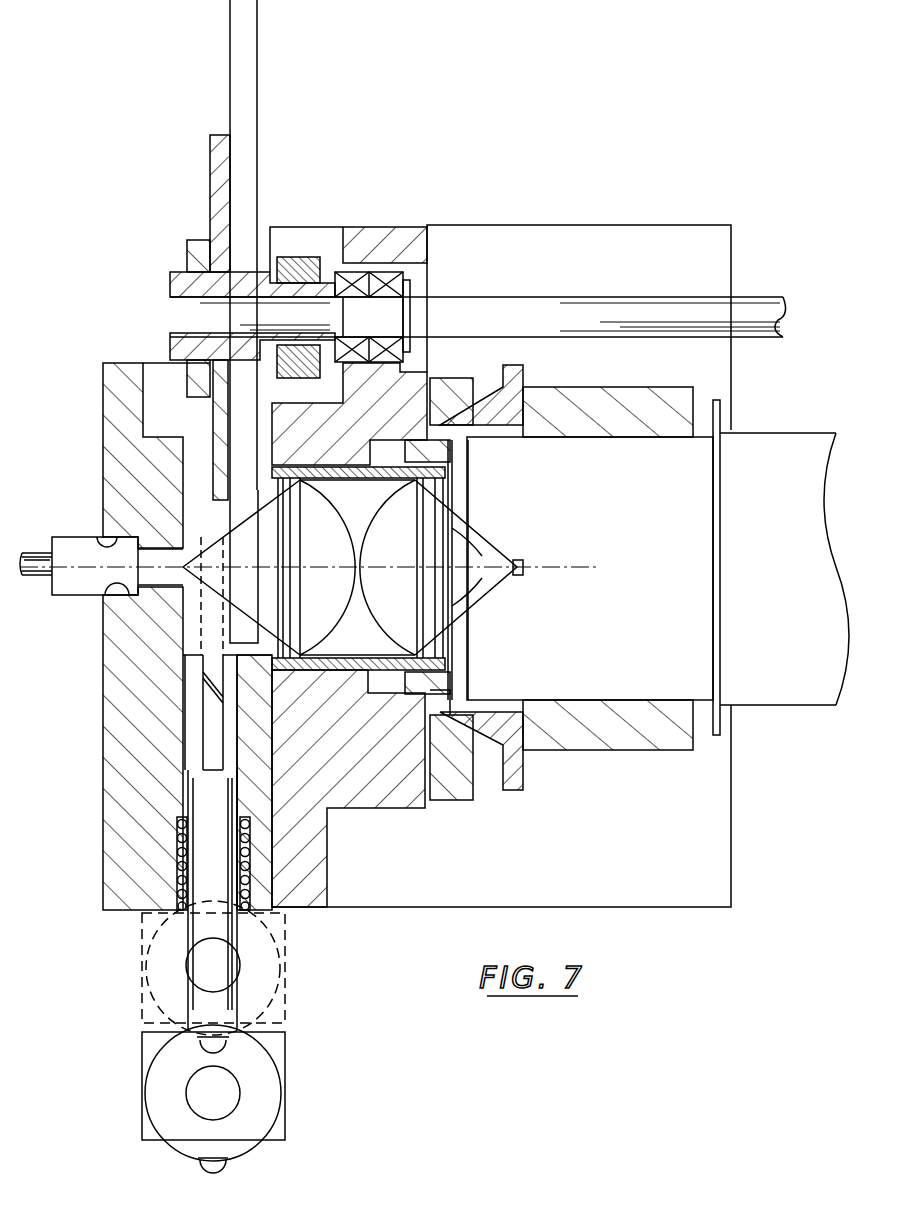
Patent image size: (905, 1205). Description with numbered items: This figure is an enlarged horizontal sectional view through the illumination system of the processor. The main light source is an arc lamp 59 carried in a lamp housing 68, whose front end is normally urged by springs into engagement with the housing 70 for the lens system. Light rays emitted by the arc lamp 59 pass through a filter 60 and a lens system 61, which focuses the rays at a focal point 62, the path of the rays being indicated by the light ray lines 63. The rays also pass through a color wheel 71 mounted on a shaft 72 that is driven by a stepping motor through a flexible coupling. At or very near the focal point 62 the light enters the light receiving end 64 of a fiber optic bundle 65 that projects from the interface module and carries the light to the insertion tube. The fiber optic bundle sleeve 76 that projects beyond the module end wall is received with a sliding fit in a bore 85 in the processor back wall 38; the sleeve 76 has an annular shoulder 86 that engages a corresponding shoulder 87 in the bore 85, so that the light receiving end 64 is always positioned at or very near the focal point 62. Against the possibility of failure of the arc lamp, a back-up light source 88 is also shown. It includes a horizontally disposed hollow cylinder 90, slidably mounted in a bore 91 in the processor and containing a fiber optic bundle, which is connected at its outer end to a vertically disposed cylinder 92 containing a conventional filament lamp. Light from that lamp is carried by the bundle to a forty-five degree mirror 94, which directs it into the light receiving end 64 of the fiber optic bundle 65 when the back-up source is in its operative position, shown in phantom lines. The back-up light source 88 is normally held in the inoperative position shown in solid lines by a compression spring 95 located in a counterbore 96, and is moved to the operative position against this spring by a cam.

The back wall 38 is at (112, 718).
The arc lamp 59 is at (661, 583).
The filter 60 is at (445, 502).
The lens system 61 is at (355, 530).
The focal point 62 is at (183, 567).
The light ray lines 63 is at (467, 597).
The light receiving end 64 is at (180, 567).
The fiber optic bundle 65 is at (45, 572).
The lamp housing 68 is at (611, 744).
The housing 70 is at (396, 806).
The color wheel 71 is at (247, 42).
The shaft 72 is at (573, 312).
The fiber optic bundle sleeve 76 is at (70, 548).
The bore 85 is at (104, 540).
The annular shoulder 86 is at (118, 596).
The shoulder 87 is at (140, 548).
The back-up light source 88 is at (180, 752).
The hollow cylinder 90 is at (219, 873).
The bore 91 is at (236, 840).
The vertically disposed cylinder 92 is at (272, 1093).
The 45° mirror 94 is at (238, 522).
The compression spring 95 is at (183, 862).
The counterbore 96 is at (262, 862).